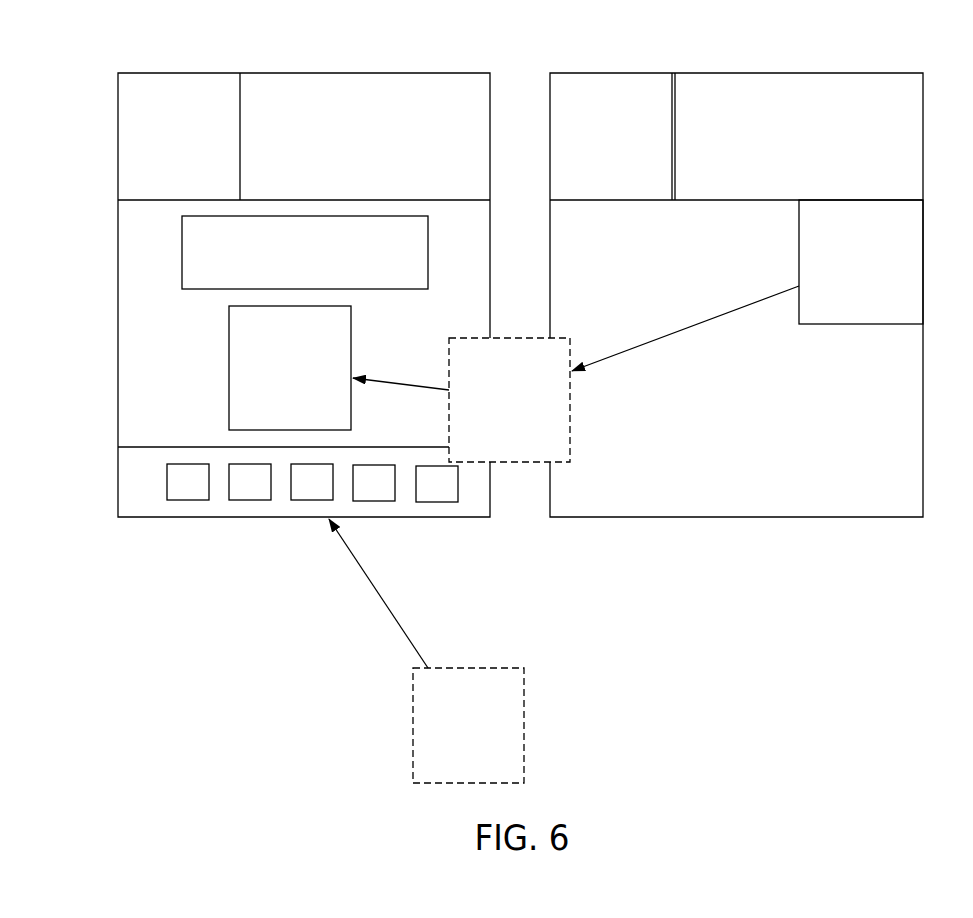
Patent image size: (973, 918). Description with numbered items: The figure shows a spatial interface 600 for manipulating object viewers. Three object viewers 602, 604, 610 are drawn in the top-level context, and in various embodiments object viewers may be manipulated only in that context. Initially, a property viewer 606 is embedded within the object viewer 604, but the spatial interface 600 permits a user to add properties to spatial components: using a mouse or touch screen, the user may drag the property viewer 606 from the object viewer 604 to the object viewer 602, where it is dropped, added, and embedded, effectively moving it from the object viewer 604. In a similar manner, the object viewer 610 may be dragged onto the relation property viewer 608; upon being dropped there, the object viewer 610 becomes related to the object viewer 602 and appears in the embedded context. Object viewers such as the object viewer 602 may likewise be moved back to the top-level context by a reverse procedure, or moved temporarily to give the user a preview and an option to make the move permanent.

The spatial interface 600 is at (78, 77).
The object viewer 602 is at (350, 73).
The object viewer 604 is at (783, 73).
The property viewer 606 is at (229, 367).
The relation property viewer 608 is at (130, 463).
The object viewer 610 is at (460, 668).